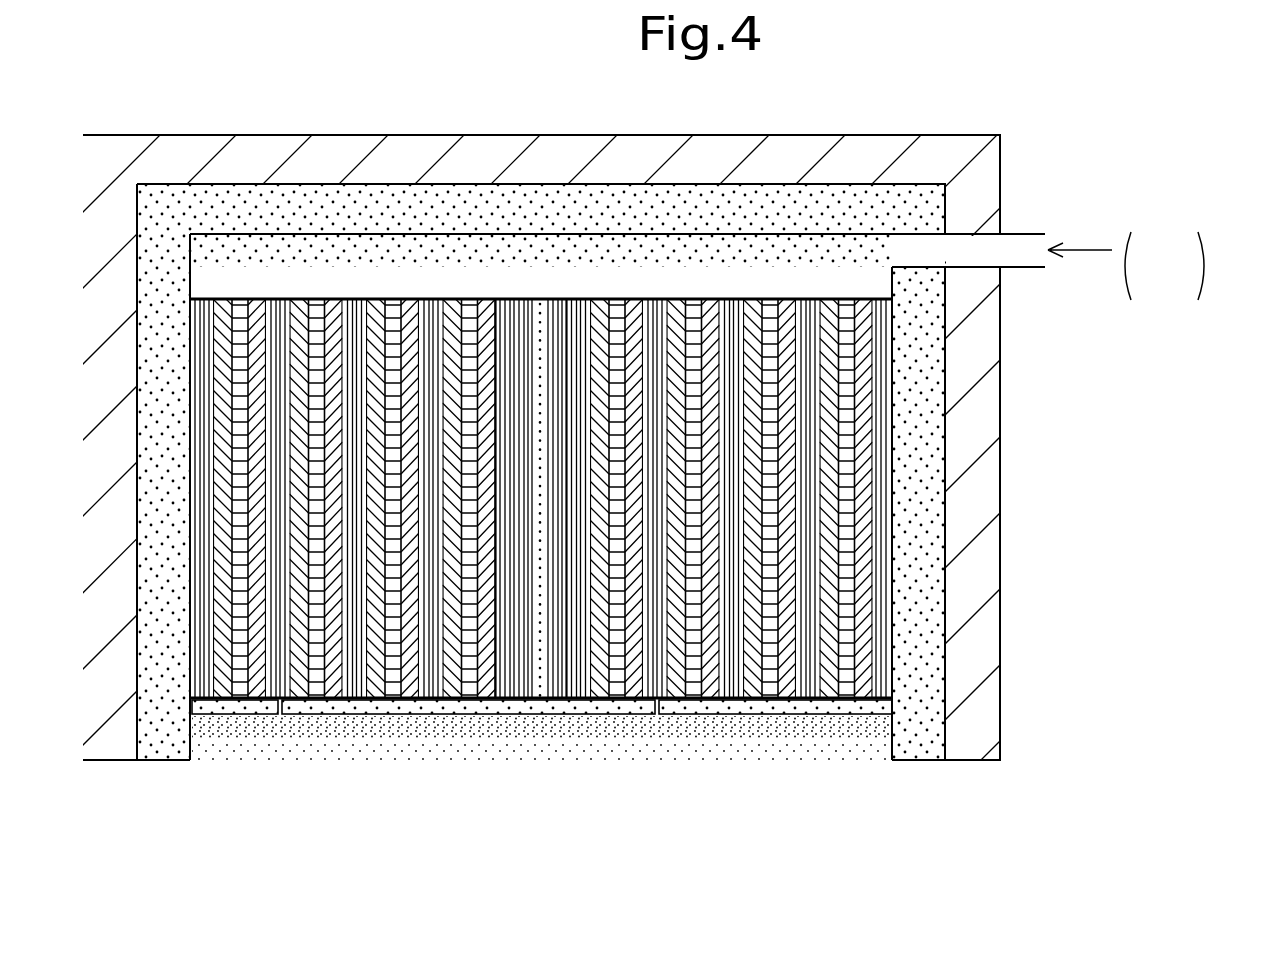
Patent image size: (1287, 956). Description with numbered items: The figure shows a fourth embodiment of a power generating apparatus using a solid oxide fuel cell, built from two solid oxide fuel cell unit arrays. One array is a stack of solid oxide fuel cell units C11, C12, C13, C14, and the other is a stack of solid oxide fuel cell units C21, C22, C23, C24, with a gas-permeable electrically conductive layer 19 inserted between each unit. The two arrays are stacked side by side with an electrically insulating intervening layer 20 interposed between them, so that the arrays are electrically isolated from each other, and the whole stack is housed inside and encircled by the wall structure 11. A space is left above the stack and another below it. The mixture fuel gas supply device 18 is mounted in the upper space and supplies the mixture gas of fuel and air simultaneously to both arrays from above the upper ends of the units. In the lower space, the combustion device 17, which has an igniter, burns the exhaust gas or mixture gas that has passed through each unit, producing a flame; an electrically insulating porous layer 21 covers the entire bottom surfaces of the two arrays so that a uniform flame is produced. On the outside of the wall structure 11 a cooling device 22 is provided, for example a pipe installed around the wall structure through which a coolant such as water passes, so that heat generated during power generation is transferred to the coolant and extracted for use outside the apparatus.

The wall structure 11 is at (918, 580).
The combustion device 17 is at (365, 762).
The mixture fuel gas supply device 18 is at (1020, 233).
The gas-permeable electrically conductive layer 19 is at (280, 716).
The electrically insulating intervening layer 20 is at (531, 471).
The electrically insulating porous layer 21 is at (806, 714).
The cooling device 22 is at (993, 470).
The solid oxide fuel cell unit C11 is at (239, 476).
The solid oxide fuel cell unit C12 is at (316, 476).
The solid oxide fuel cell unit C13 is at (392, 476).
The solid oxide fuel cell unit C14 is at (469, 476).
The solid oxide fuel cell unit C21 is at (616, 476).
The solid oxide fuel cell unit C22 is at (693, 476).
The solid oxide fuel cell unit C23 is at (769, 476).
The solid oxide fuel cell unit C24 is at (846, 476).